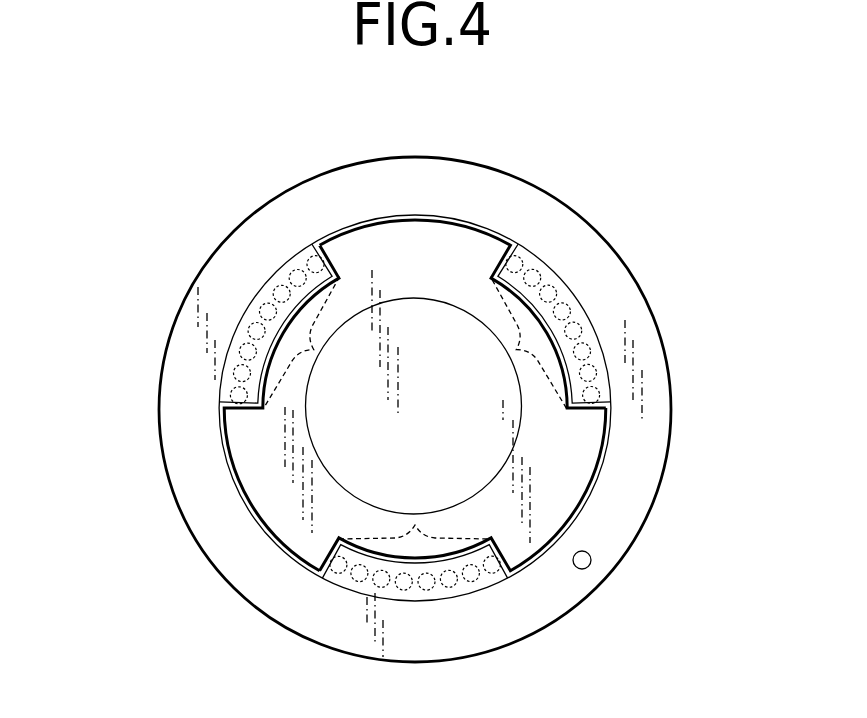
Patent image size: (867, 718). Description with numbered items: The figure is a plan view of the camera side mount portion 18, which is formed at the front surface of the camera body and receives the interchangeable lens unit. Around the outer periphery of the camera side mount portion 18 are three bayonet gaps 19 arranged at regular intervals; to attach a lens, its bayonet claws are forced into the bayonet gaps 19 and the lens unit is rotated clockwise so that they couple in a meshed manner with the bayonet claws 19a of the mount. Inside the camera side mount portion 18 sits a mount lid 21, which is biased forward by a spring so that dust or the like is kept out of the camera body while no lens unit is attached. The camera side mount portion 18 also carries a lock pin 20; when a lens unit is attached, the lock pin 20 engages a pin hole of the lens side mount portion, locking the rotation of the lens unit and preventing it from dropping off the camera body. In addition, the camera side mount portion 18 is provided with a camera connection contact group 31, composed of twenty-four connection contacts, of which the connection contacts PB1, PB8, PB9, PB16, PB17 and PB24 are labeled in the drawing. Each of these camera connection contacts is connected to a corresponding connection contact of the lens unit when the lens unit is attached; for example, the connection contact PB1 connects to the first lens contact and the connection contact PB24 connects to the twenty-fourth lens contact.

The camera side mount portion 18 is at (413, 159).
The bayonet gaps 19 is at (445, 217).
The bayonet claws 19a is at (575, 314).
The lock pin 20 is at (586, 568).
The mount lid 21 is at (407, 260).
The camera connection contact group 31 is at (415, 408).
The connection contact PB1 is at (596, 400).
The connection contact PB8 is at (513, 258).
The connection contact PB9 is at (315, 258).
The connection contact PB16 is at (238, 397).
The connection contact PB17 is at (336, 569).
The connection contact PB24 is at (494, 570).